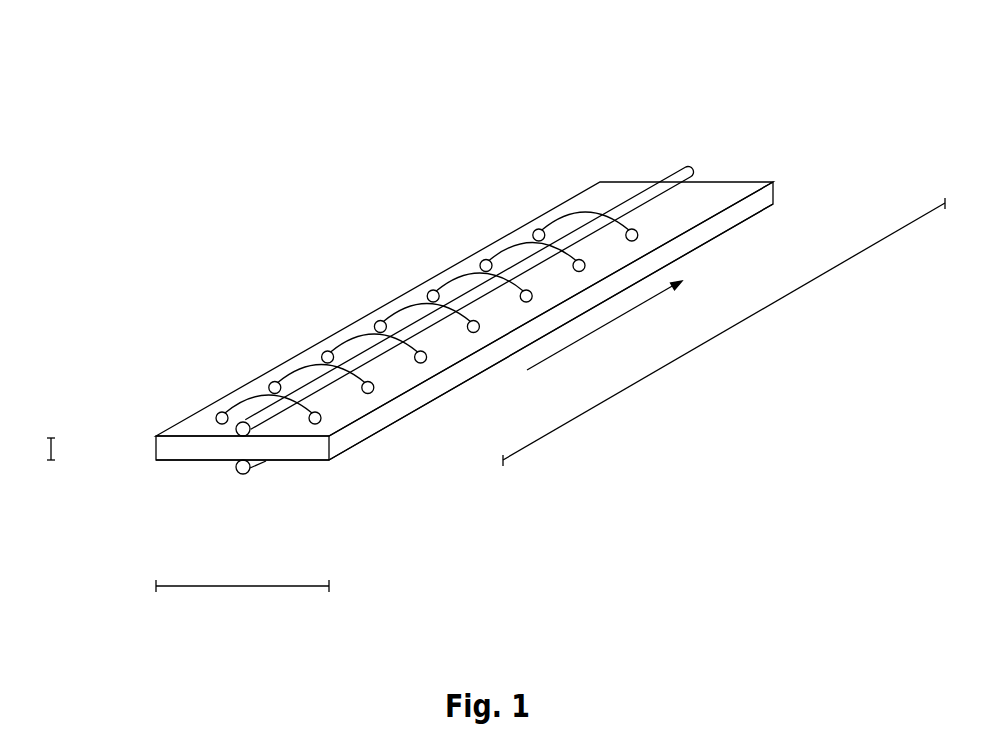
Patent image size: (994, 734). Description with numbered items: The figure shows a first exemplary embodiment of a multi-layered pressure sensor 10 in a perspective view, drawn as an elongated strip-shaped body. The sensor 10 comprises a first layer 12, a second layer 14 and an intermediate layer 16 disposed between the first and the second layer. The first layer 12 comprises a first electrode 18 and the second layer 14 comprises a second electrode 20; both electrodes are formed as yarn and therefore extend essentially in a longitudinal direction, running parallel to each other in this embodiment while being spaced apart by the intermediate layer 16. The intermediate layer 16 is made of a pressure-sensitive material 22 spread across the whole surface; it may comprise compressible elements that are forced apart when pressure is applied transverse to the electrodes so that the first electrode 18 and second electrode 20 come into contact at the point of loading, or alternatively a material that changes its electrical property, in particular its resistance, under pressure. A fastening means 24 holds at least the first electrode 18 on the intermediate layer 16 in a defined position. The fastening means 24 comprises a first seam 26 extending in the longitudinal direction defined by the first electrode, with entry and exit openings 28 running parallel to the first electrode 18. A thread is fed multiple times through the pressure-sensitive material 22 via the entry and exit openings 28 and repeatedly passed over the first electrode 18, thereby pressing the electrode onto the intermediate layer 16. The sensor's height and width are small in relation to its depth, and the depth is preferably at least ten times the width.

The sensor 10 is at (487, 316).
The first layer 12 is at (145, 422).
The second layer 14 is at (148, 472).
The intermediate layer 16 is at (140, 448).
The first electrode 18 is at (658, 185).
The second electrode 20 is at (258, 465).
The pressure-sensitive material 22 is at (305, 451).
The fastening means 24 is at (373, 305).
The first seam 26 is at (405, 350).
The entry and exit openings 28 is at (433, 290).